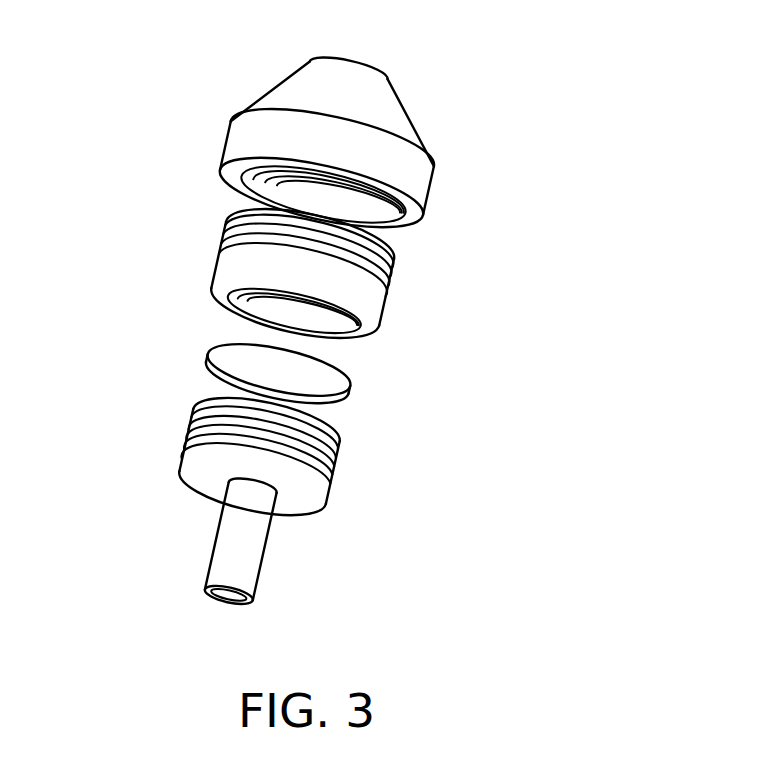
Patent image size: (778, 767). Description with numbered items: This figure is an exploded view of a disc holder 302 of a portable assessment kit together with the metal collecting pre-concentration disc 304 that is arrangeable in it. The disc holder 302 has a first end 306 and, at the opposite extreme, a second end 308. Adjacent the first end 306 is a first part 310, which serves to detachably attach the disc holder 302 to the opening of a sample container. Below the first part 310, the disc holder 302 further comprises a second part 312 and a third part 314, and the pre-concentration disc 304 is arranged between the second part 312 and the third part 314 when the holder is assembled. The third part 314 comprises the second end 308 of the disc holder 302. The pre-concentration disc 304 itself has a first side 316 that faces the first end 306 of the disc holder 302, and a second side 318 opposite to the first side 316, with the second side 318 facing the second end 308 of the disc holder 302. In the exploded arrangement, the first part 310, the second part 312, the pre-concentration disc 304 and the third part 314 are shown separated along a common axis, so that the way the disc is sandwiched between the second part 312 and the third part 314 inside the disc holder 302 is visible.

The disc holder 302 is at (139, 55).
The pre-concentration disc 304 is at (273, 395).
The first end 306 is at (319, 140).
The second end 308 is at (251, 602).
The first part 310 is at (220, 167).
The second part 312 is at (216, 278).
The third part 314 is at (181, 469).
The first side 316 is at (351, 381).
The second side 318 is at (350, 394).